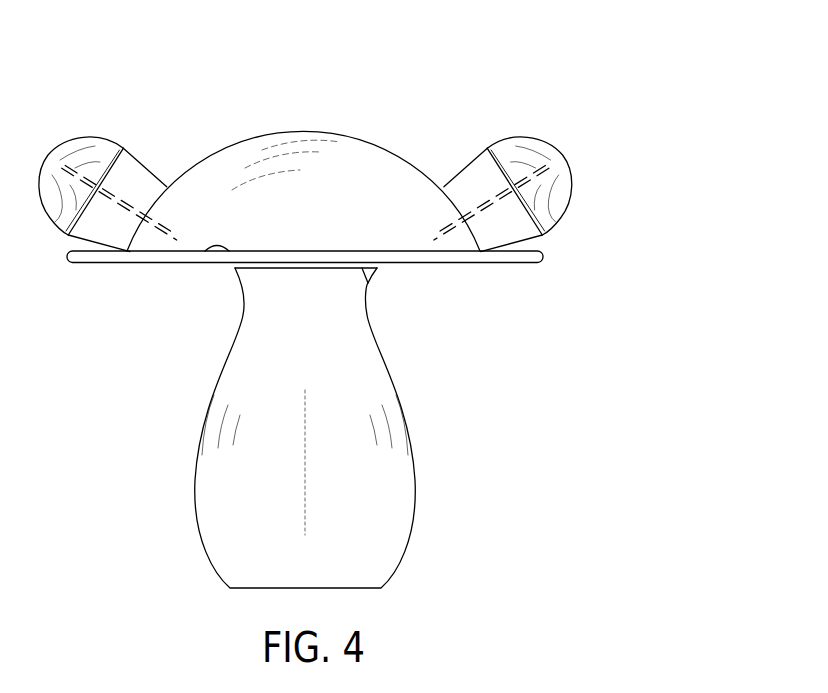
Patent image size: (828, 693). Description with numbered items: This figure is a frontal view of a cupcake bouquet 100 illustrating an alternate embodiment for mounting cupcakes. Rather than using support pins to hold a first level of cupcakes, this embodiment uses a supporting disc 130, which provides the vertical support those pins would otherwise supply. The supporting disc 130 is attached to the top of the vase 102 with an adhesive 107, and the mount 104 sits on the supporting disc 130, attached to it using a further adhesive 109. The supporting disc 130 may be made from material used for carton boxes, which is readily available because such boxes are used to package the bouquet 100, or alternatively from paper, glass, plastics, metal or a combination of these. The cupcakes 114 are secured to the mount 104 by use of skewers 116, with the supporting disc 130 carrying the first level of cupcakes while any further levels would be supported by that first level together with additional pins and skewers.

The cupcake bouquet 100 is at (626, 43).
The vase 102 is at (387, 357).
The mount 104 is at (398, 161).
The adhesive 107 is at (370, 283).
The adhesive 109 is at (210, 245).
The cupcakes 114 is at (112, 138).
The skewers 116 is at (177, 242).
The supporting disc 130 is at (512, 265).